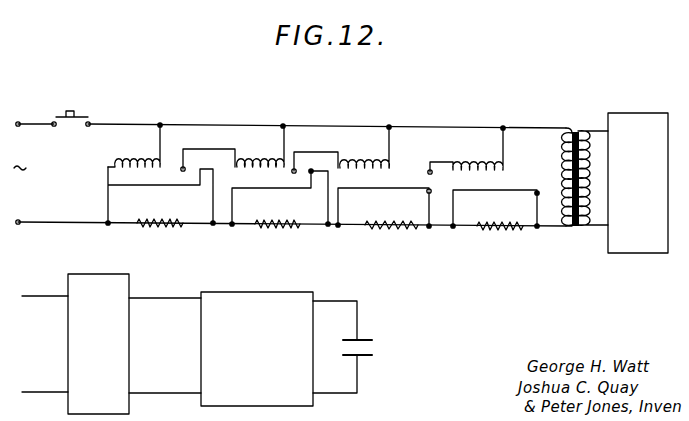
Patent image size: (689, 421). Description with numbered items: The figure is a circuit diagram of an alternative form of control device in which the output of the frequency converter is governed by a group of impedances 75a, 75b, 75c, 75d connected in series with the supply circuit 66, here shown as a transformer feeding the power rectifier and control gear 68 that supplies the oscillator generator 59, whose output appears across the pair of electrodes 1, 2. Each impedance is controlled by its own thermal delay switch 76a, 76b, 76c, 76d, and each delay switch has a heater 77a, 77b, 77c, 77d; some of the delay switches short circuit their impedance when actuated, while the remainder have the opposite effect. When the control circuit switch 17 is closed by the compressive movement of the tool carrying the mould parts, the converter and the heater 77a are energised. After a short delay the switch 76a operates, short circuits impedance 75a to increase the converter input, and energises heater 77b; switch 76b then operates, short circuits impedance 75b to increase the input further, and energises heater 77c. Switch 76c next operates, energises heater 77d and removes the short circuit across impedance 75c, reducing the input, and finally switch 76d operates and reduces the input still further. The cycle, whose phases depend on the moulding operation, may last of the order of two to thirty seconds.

The control circuit switch 17 is at (63, 116).
The heater of delay switch 76a 77a is at (122, 162).
The heater of delay switch 76b 77b is at (250, 160).
The heater of delay switch 76c 77c is at (352, 165).
The heater of delay switch 76d 77d is at (467, 160).
The thermal delay switch 76a is at (172, 185).
The thermal delay switch 76b is at (297, 187).
The thermal delay switch 76c is at (401, 186).
The thermal delay switch 76d is at (508, 188).
The impedance 75a is at (168, 229).
The impedance 75b is at (292, 230).
The impedance 75c is at (409, 230).
The impedance 75d is at (514, 231).
The supply circuit 66 is at (554, 225).
The power rectifier and control gear for oscillator 68 is at (625, 127).
The oscillator generator 59 is at (290, 397).
The capacitor electrode 1 is at (365, 338).
The capacitor electrode 2 is at (363, 357).